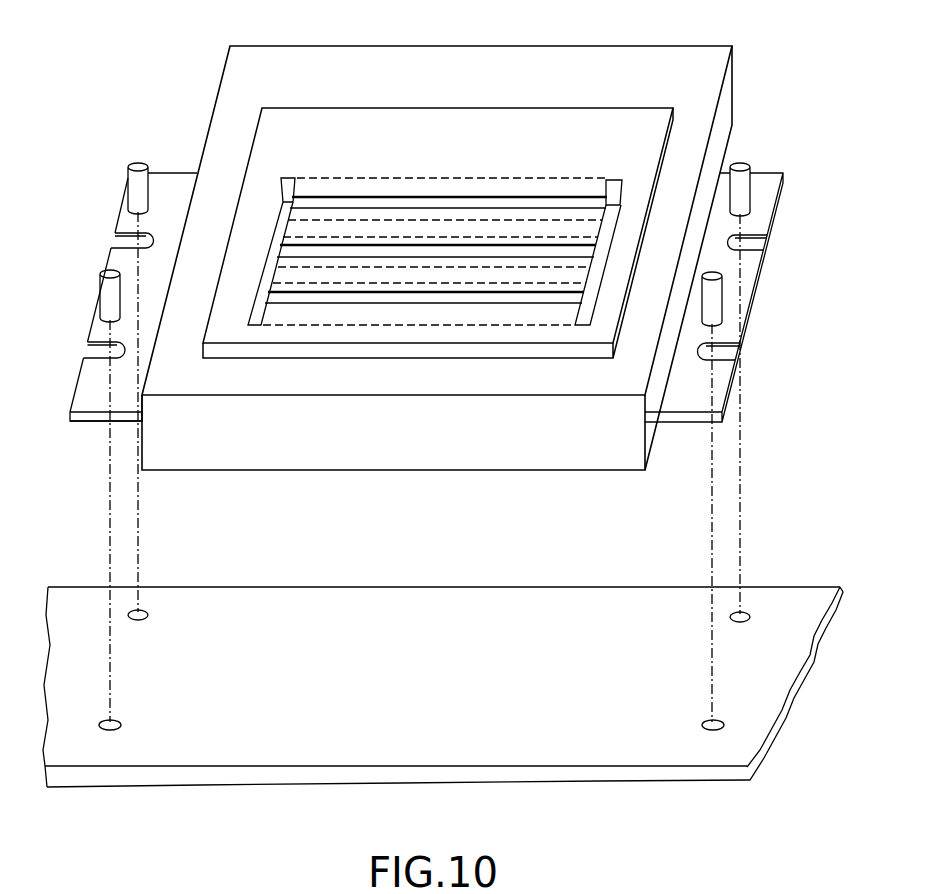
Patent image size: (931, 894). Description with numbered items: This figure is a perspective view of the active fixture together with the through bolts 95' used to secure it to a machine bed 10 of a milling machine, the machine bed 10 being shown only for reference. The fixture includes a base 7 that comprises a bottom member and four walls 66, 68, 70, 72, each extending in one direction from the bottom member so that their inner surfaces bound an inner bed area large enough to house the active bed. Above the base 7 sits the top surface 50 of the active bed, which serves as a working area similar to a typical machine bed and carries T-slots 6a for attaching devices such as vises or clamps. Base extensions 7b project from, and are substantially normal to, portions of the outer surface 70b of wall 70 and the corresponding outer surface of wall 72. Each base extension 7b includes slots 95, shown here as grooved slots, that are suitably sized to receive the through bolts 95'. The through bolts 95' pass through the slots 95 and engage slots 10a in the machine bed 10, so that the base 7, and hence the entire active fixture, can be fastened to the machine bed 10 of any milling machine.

The wall 68 is at (370, 63).
The wall 72 is at (705, 77).
The wall 66 is at (460, 378).
The top surface 50 is at (600, 328).
The T-slots 6a is at (345, 295).
The base 7 is at (630, 452).
The outer surface 70b is at (133, 262).
The base extensions 7b is at (83, 392).
The wall 70 is at (162, 380).
The slots 95 is at (432, 292).
The through bolts 95' is at (429, 423).
The machine bed 10 is at (365, 745).
The slots 10a is at (118, 718).